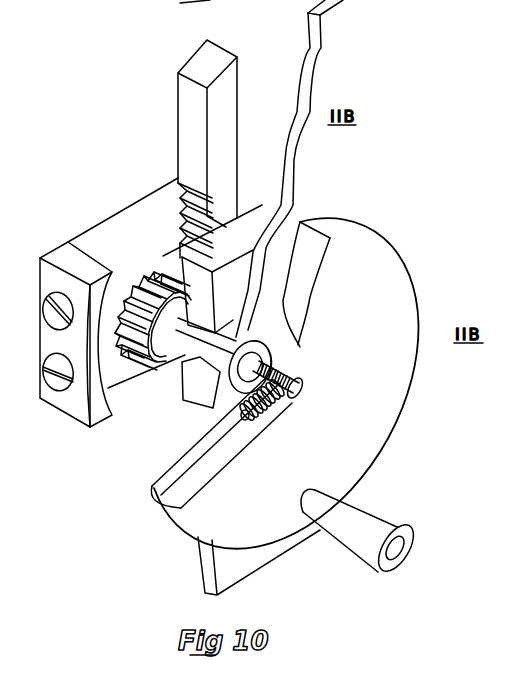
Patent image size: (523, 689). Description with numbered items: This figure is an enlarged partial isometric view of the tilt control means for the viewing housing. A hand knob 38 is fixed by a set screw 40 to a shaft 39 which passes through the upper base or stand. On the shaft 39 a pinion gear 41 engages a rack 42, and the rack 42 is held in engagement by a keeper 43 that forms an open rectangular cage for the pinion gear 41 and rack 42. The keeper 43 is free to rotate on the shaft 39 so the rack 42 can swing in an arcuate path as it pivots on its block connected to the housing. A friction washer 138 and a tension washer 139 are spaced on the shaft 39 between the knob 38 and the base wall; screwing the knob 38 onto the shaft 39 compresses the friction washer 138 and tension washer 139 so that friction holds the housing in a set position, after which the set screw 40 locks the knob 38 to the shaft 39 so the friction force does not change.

The hand knob 38 is at (390, 436).
The friction washer 138 is at (273, 327).
The shaft 39 is at (182, 367).
The tension washer 139 is at (205, 368).
The set screw 40 is at (249, 420).
The pinion gear 41 is at (140, 252).
The rack 42 is at (185, 117).
The keeper 43 is at (157, 193).